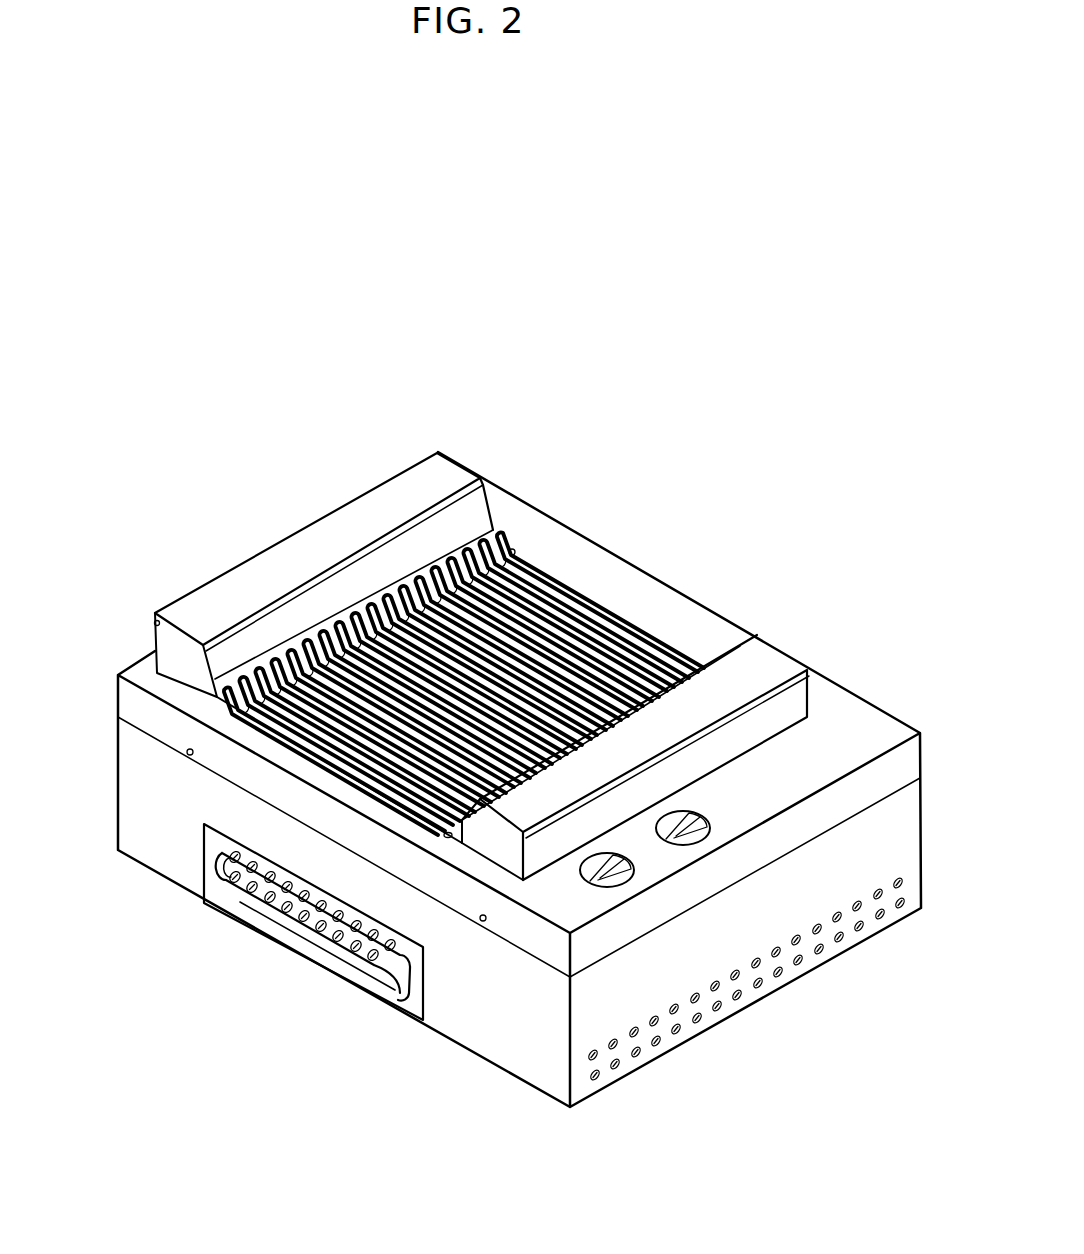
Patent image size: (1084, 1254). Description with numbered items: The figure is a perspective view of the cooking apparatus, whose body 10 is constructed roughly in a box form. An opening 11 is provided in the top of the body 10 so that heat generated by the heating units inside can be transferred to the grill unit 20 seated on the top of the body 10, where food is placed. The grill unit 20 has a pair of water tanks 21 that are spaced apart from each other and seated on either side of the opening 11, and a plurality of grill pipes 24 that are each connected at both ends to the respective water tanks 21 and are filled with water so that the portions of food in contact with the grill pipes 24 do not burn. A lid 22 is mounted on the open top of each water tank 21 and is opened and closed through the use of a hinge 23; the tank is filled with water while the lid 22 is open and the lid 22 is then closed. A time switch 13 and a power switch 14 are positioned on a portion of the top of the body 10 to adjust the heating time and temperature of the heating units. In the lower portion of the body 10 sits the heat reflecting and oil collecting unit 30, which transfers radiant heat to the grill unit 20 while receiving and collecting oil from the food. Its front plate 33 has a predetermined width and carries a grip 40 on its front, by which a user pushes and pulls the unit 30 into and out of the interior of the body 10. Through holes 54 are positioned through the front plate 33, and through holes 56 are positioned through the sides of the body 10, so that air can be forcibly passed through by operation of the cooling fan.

The body 10 is at (870, 676).
The opening 11 is at (567, 590).
The time switch 13 is at (627, 882).
The power switch 14 is at (697, 835).
The grill unit 20 is at (610, 591).
The water tank 21 is at (158, 661).
The lid 22 is at (388, 497).
The hinge 23 is at (152, 623).
The grill pipe 24 is at (285, 737).
The heat reflecting and oil collecting unit 30 is at (195, 929).
The front plate 33 is at (413, 990).
The grip 40 is at (288, 933).
The through holes 54 is at (340, 935).
The through holes 56 is at (803, 963).